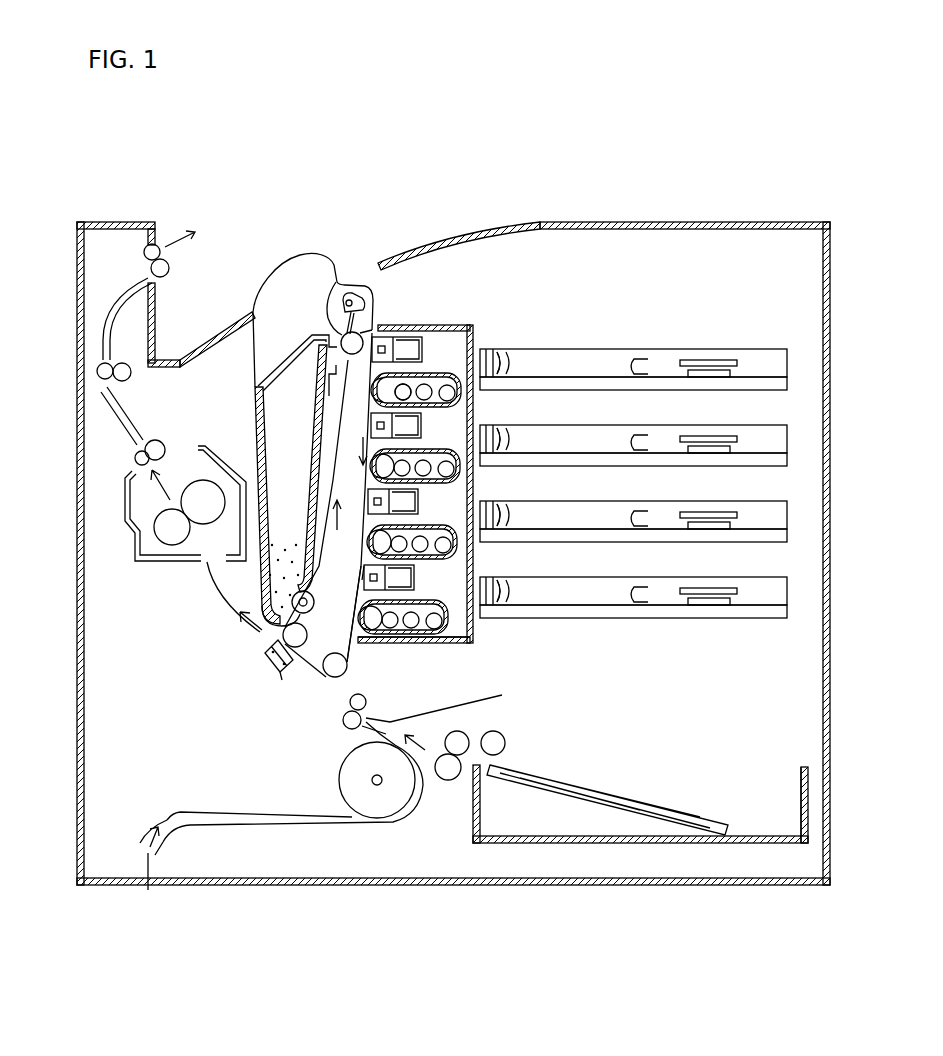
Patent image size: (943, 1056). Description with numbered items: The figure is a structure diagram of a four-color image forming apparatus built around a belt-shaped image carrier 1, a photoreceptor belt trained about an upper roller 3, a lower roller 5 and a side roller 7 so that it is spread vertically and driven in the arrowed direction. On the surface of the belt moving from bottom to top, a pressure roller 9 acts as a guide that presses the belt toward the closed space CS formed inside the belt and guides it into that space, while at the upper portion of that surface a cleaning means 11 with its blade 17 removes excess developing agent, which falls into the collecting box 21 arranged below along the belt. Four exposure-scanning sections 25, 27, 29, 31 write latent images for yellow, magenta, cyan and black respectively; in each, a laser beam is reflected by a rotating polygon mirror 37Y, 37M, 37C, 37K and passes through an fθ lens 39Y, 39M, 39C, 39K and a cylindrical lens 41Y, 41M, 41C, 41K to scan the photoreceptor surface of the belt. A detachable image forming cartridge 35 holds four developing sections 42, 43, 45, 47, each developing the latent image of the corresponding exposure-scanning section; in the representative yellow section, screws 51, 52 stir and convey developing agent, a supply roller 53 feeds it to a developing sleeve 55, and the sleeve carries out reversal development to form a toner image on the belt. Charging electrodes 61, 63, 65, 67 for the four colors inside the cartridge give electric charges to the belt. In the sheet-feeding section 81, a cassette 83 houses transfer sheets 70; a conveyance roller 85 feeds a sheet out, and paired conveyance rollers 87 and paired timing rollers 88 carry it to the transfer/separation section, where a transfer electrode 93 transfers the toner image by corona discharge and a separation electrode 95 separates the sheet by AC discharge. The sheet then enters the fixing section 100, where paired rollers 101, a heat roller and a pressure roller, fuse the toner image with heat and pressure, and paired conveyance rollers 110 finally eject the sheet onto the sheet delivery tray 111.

The belt-shaped image carrier 1 is at (303, 670).
The upper roller 3 is at (340, 338).
The lower roller 5 is at (337, 678).
The side roller 7 is at (279, 637).
The pressure roller 9 is at (280, 603).
The cleaning means 11 is at (355, 268).
The blade 17 is at (338, 268).
The collecting box 21 is at (262, 450).
The exposure-scanning section 25 is at (787, 364).
The exposure-scanning section 27 is at (787, 440).
The exposure-scanning section 29 is at (787, 516).
The exposure-scanning section 31 is at (787, 592).
The image forming cartridge 35 is at (480, 282).
The polygon mirror 37Y is at (718, 360).
The polygon mirror 37M is at (718, 436).
The polygon mirror 37C is at (718, 512).
The polygon mirror 37K is at (718, 588).
The fθ lens 39Y is at (632, 359).
The fθ lens 39M is at (632, 435).
The fθ lens 39C is at (632, 511).
The fθ lens 39K is at (632, 587).
The cylindrical lens 41Y is at (505, 362).
The cylindrical lens 41M is at (505, 438).
The cylindrical lens 41C is at (505, 514).
The cylindrical lens 41K is at (505, 590).
The developing section 42 is at (448, 414).
The developing section 43 is at (448, 488).
The developing section 45 is at (444, 565).
The developing section 47 is at (453, 643).
The screw 51 is at (447, 420).
The screw 52 is at (410, 385).
The supply roller 53 is at (383, 346).
The developing sleeve 55 is at (372, 392).
The charging electrode 61 is at (383, 322).
The charging electrode 63 is at (362, 430).
The charging electrode 65 is at (370, 502).
The charging electrode 67 is at (364, 578).
The transfer sheet 70 is at (613, 787).
The sheet-feeding section 81 is at (703, 713).
The cassette 83 is at (808, 805).
The conveyance roller 85 is at (507, 743).
The paired conveyance rollers 87 is at (463, 730).
The paired timing rollers 88 is at (366, 701).
The transfer electrode 93 is at (277, 665).
The separation electrode 95 is at (268, 668).
The fixing section 100 is at (115, 495).
The paired rollers 101 is at (150, 533).
The paired conveyance rollers 110 is at (170, 268).
The sheet delivery tray 111 is at (187, 343).
The closed space CS is at (330, 633).